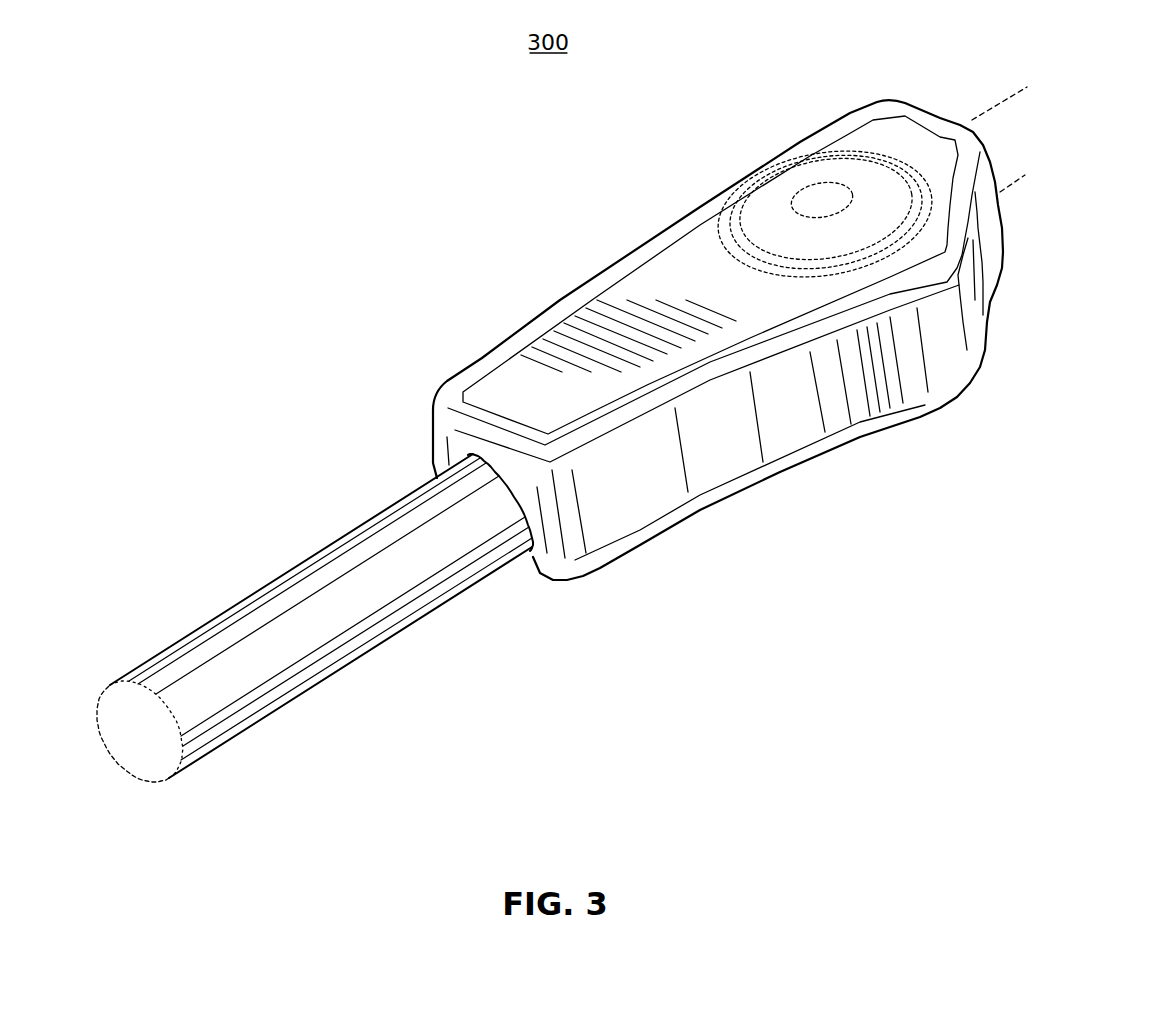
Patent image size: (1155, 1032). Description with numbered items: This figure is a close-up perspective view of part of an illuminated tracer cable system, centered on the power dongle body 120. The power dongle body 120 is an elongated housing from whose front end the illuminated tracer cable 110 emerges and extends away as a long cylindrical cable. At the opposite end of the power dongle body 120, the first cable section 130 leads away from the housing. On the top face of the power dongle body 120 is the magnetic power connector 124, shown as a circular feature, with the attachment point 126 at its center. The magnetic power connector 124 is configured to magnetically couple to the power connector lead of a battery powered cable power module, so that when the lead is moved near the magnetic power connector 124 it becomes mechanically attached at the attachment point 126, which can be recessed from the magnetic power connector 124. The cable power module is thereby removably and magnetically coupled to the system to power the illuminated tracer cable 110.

The illuminated tracer cable 110 is at (383, 620).
The power dongle body 120 is at (782, 458).
The magnetic power connector 124 is at (738, 218).
The attachment point 126 is at (820, 203).
The first cable section 130 is at (1013, 140).